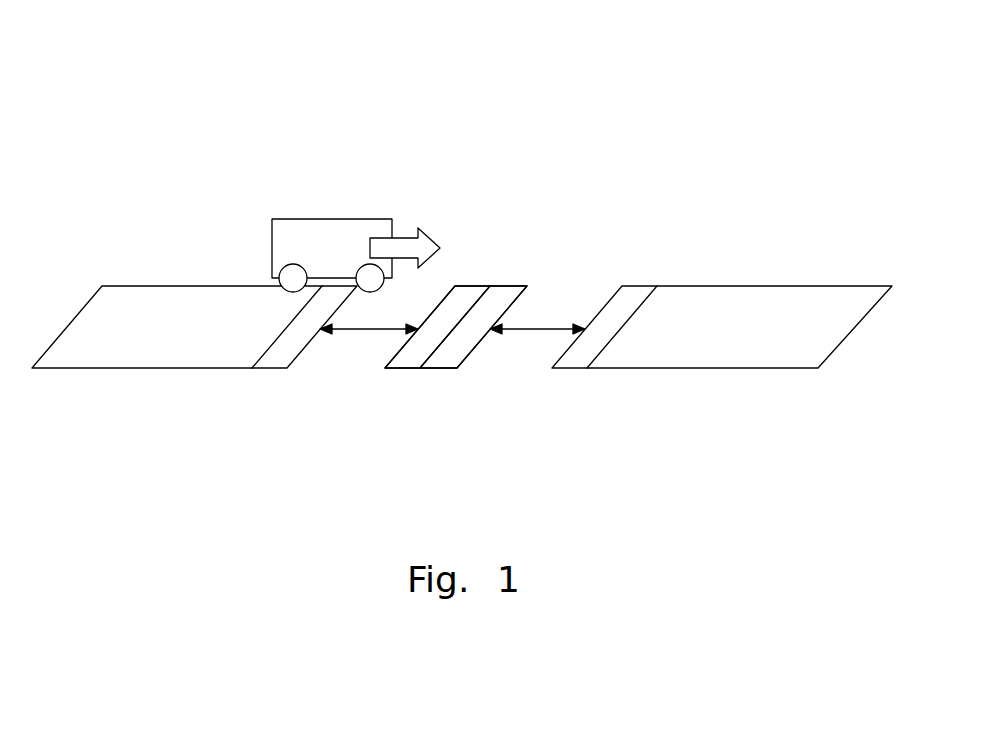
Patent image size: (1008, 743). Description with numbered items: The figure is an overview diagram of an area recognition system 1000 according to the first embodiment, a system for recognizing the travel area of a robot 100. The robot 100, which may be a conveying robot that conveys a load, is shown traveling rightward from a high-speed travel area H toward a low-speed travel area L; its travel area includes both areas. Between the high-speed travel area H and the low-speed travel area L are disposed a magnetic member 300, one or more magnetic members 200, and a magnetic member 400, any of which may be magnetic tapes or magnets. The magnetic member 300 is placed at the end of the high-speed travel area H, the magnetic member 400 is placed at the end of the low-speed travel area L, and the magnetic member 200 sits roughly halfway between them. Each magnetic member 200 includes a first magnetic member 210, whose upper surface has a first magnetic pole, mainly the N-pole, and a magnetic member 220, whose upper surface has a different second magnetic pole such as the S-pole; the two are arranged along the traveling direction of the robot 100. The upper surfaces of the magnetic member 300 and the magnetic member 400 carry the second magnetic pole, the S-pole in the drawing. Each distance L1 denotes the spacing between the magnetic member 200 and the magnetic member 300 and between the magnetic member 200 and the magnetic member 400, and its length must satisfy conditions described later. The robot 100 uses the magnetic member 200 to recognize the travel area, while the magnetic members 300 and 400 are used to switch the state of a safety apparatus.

The area recognition system 1000 is at (97, 72).
The robot 100 is at (340, 219).
The magnetic member 200 is at (426, 407).
The first magnetic member 210 is at (400, 370).
The magnetic member 220 is at (440, 370).
The magnetic member 300 is at (272, 370).
The magnetic member 400 is at (575, 370).
The high-speed travel area H is at (128, 286).
The low-speed travel area L is at (790, 286).
The distance L1 is at (452, 346).